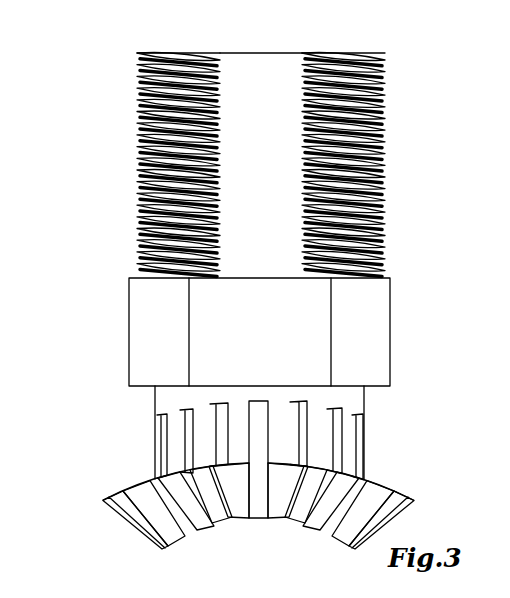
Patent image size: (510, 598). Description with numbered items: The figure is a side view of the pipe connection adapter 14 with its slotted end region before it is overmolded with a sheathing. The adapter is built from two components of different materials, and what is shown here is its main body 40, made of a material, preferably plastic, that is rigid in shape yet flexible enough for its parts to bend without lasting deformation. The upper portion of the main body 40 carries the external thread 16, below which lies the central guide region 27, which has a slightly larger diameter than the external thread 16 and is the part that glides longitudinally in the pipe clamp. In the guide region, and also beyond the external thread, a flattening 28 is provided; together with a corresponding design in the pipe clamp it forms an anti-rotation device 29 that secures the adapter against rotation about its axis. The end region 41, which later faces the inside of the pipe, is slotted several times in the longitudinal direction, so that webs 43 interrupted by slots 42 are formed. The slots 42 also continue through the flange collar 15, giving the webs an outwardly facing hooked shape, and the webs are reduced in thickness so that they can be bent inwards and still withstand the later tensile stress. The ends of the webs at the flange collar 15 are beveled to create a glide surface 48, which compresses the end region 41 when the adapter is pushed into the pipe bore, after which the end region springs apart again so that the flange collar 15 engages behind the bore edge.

The pipe connection adapter 14 is at (103, 142).
The flange collar 15 is at (418, 493).
The external thread 16 is at (388, 162).
The central guide region 27 is at (393, 318).
The flattening 28 is at (269, 218).
The anti-rotation device 29 is at (275, 78).
The main body 40 is at (142, 290).
The end region 41 is at (74, 533).
The slots 42 is at (261, 508).
The webs 43 is at (240, 494).
The glide surface 48 is at (142, 532).